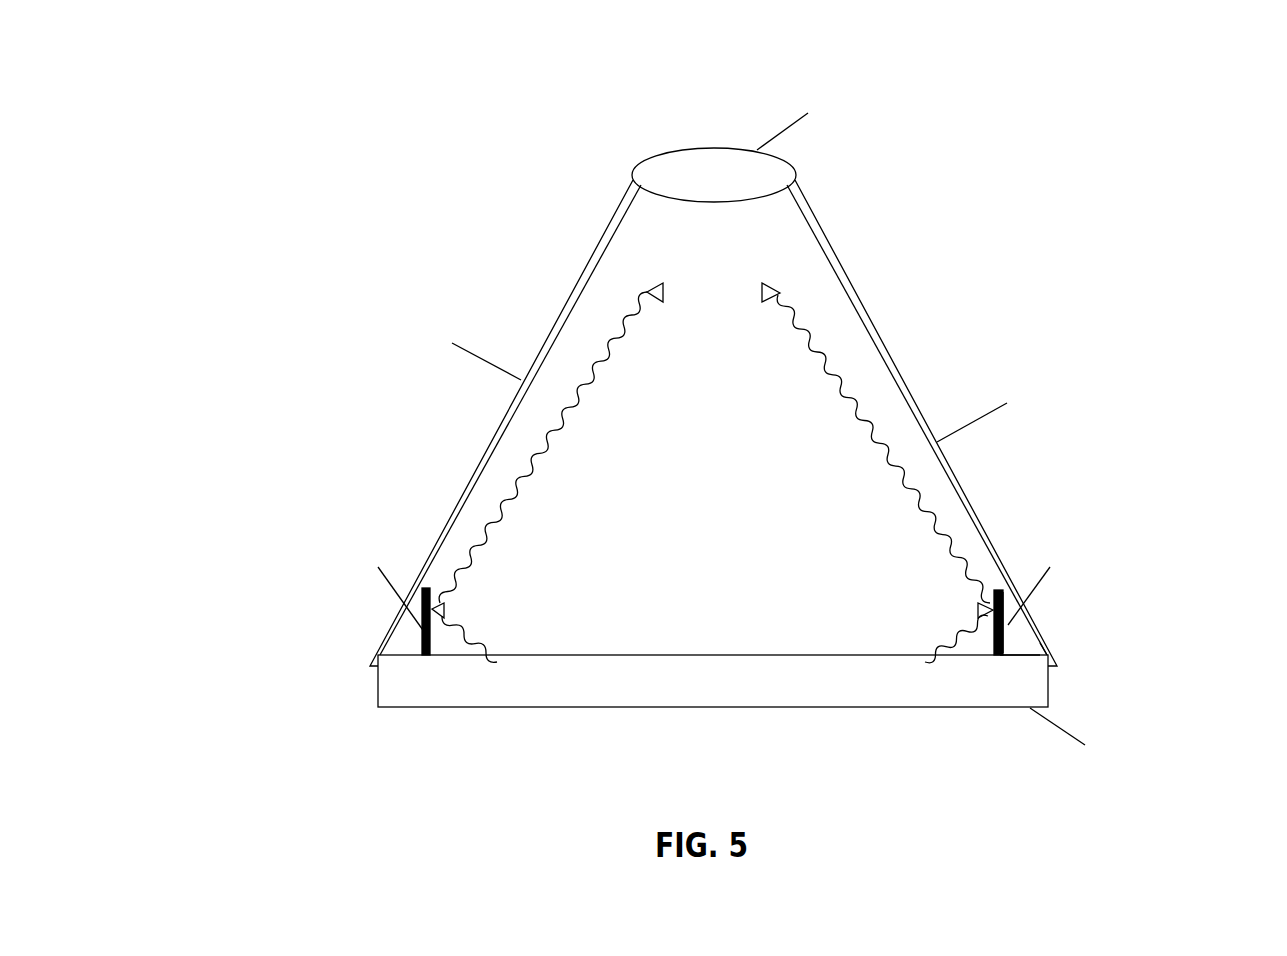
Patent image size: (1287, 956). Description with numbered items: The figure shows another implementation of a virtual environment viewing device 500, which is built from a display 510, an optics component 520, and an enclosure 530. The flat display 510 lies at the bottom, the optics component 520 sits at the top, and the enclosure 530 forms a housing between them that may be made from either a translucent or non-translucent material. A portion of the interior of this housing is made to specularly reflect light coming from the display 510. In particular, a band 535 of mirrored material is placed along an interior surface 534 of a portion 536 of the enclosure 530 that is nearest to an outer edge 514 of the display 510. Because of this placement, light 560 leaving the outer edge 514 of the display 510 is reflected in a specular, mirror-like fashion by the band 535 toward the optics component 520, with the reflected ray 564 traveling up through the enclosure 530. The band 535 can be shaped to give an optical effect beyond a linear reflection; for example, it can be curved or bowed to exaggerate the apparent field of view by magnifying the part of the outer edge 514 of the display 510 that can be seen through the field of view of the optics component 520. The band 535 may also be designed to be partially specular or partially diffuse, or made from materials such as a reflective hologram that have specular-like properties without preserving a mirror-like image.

The virtual environment viewing device 500 is at (1117, 168).
The display 510 is at (967, 709).
The outer edge 514 is at (1017, 663).
The optics component 520 is at (701, 147).
The enclosure 530 is at (894, 339).
The interior surface 534 is at (1003, 589).
The band 535 is at (1009, 627).
The portion 536 is at (1052, 645).
The light 560 is at (494, 632).
The reflected light ray 564 is at (604, 381).